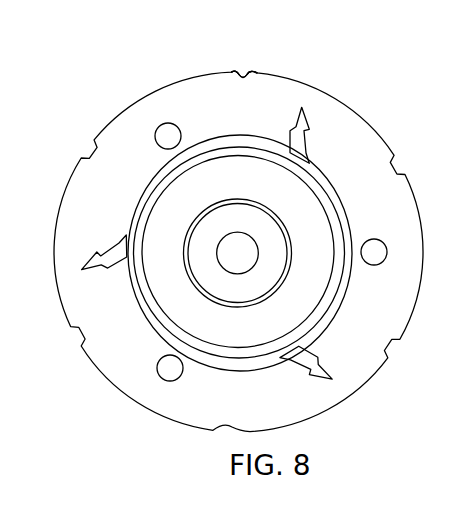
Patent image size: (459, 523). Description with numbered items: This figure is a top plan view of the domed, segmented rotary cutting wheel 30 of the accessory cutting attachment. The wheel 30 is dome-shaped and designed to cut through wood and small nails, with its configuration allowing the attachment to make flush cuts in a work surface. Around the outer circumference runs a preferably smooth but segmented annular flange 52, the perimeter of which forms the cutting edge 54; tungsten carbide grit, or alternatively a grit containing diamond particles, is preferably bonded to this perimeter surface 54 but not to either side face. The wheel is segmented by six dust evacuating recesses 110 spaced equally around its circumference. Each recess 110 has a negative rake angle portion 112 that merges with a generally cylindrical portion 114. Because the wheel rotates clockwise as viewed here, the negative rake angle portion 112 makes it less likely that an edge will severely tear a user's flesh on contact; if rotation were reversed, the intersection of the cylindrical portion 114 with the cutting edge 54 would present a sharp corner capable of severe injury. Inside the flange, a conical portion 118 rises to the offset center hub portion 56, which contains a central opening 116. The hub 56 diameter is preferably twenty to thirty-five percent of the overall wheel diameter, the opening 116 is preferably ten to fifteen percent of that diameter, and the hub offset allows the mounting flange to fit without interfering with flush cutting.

The rotary cutting wheel 30 is at (365, 79).
The segmented annular flange 52 is at (92, 210).
The cutting edge 54 is at (118, 116).
The center hub portion 56 is at (244, 216).
The dust evacuating recesses 110 is at (242, 58).
The negative rake angle portion 112 is at (234, 71).
The generally cylindrical portion 114 is at (254, 71).
The opening 116 is at (219, 268).
The conical portion 118 is at (305, 295).